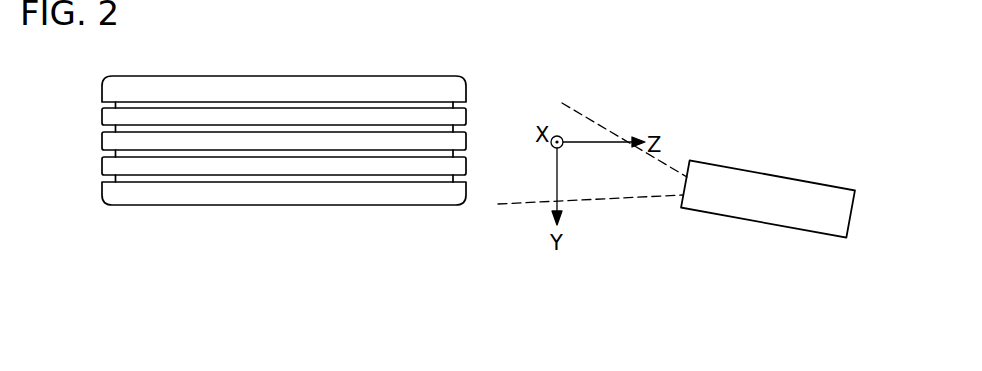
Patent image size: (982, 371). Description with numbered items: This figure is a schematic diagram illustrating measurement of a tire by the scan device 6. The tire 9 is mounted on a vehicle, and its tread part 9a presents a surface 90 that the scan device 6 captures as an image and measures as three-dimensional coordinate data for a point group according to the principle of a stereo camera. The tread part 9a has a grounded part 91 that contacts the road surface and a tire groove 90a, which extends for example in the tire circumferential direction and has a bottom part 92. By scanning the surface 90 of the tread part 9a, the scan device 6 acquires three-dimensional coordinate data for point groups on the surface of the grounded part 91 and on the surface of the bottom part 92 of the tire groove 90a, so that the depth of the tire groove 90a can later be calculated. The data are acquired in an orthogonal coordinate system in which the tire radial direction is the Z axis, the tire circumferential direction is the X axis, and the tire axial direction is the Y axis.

The tire 9 is at (333, 172).
The tread part 9a is at (459, 191).
The surface 90 is at (333, 96).
The grounded part 91 is at (467, 94).
The bottom part 92 is at (455, 104).
The tire groove 90a is at (467, 178).
The scan device 6 is at (787, 178).